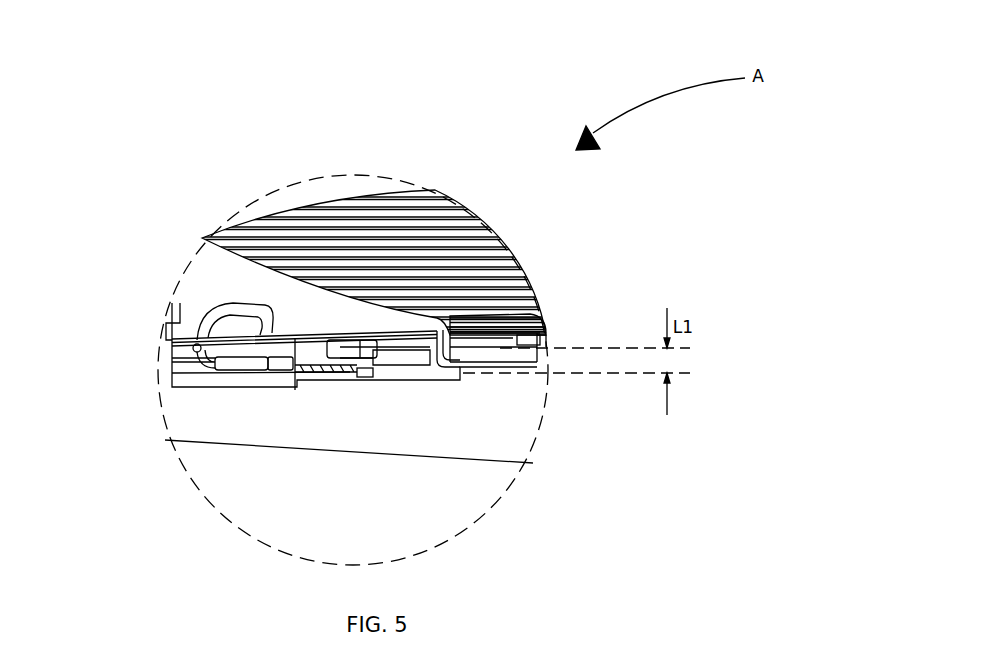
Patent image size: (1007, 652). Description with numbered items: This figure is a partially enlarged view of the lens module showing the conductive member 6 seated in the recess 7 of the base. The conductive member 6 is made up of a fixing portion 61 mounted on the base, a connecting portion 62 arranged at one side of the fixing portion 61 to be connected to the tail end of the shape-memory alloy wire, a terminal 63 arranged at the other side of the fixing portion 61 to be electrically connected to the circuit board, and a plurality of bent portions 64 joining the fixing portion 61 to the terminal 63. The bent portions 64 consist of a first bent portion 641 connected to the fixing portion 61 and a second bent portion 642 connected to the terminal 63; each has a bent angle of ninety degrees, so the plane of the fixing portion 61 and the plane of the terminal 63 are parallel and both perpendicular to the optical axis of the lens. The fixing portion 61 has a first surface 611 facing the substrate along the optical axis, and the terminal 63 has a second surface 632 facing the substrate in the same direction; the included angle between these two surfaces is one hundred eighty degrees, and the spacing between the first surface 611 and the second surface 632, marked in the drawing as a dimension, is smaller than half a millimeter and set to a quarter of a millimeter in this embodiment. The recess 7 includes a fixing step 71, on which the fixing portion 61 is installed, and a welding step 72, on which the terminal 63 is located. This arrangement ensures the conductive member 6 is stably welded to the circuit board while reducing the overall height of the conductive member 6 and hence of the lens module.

The conductive member 6 is at (508, 98).
The fixing portion 61 is at (297, 333).
The first surface 611 is at (403, 362).
The connecting portion 62 is at (237, 303).
The terminal 63 is at (480, 345).
The second surface 632 is at (503, 335).
The bent portions 64 is at (347, 122).
The first bent portion 641 is at (437, 338).
The second bent portion 642 is at (450, 335).
The recess 7 is at (195, 345).
The fixing step 71 is at (323, 380).
The welding step 72 is at (513, 367).